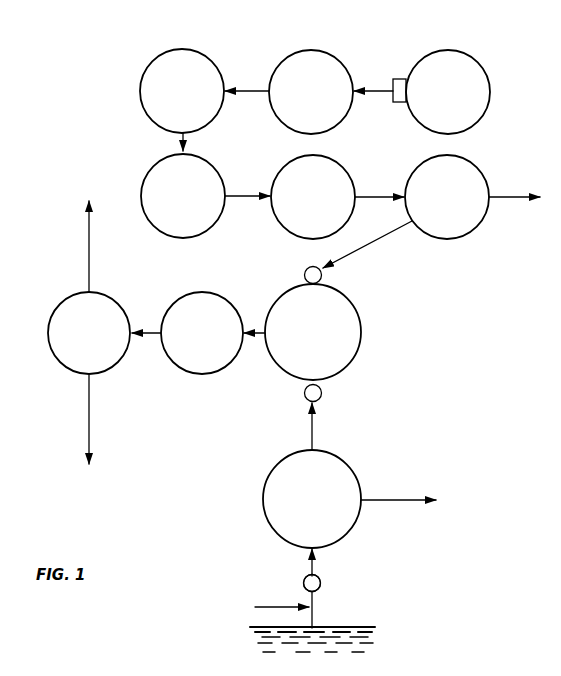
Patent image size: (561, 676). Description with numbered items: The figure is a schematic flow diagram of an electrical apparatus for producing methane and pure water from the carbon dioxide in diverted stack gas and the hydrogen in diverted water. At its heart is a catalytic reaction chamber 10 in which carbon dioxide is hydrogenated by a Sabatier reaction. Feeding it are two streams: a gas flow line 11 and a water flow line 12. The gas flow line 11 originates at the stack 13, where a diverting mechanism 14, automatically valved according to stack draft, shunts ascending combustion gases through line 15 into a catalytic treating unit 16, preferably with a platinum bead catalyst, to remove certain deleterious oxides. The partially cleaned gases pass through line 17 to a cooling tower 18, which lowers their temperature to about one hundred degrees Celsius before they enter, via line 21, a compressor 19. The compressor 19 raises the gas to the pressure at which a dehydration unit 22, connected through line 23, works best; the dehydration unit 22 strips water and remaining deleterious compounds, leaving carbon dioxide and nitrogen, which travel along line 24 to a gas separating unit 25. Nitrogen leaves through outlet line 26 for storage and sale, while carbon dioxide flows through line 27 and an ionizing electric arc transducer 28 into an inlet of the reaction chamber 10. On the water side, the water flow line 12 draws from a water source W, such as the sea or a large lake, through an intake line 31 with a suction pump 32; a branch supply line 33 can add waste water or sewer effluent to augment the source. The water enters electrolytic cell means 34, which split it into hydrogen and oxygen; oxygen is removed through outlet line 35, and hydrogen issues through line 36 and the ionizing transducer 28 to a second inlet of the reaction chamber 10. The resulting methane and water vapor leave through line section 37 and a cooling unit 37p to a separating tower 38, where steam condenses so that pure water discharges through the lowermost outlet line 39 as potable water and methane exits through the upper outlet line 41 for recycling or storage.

The catalytic reaction chamber 10 is at (361, 310).
The gas flow line 11 is at (346, 52).
The water flow line 12 is at (323, 575).
The stack 13 is at (478, 67).
The diverting mechanism 14 is at (400, 79).
The line 15 is at (380, 94).
The catalytic treating unit 16 is at (296, 62).
The line 17 is at (256, 90).
The cooling tower 18 is at (154, 62).
The compressor 19 is at (142, 190).
The line 21 is at (183, 139).
The dehydration unit 22 is at (293, 163).
The line 23 is at (250, 194).
The line 24 is at (380, 195).
The gas separating unit 25 is at (478, 165).
The outlet line 26 is at (510, 200).
The line 27 is at (376, 244).
The ionizing electric arc transducer 28 is at (305, 270).
The intake line 31 is at (310, 568).
The suction pump 32 is at (318, 590).
The branch supply line 33 is at (270, 607).
The electrolytic cell means 34 is at (268, 478).
The outlet line 35 is at (388, 498).
The line 36 is at (316, 435).
The line section 37 is at (257, 337).
The cooling unit 37p is at (185, 294).
The separating tower 38 is at (48, 324).
The lowermost outlet line 39 is at (89, 240).
The upper outlet line 41 is at (89, 420).
The water source W is at (353, 630).